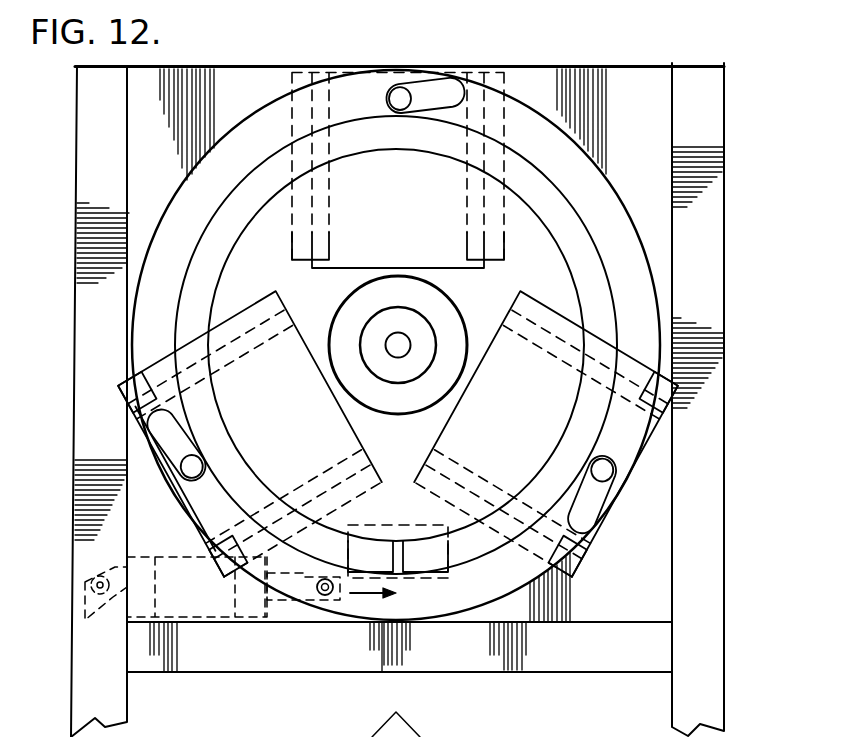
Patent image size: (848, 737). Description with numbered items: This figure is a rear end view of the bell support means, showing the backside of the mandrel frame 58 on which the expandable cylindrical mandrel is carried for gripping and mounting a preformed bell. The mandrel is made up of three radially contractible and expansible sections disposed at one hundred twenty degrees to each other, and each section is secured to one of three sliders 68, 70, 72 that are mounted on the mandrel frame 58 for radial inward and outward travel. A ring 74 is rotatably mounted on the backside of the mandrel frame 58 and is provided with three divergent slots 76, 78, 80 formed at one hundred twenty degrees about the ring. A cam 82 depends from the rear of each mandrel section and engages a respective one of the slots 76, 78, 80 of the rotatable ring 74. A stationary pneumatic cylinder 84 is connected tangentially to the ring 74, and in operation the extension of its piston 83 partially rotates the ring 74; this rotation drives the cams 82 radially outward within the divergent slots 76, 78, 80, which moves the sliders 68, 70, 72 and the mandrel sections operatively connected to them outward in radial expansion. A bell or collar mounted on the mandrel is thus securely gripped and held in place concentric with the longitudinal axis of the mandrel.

The mandrel frame 58 is at (713, 117).
The slider 68 is at (567, 377).
The slider 70 is at (253, 385).
The slider 72 is at (370, 163).
The ring 74 is at (637, 251).
The divergent slot 76 is at (588, 510).
The divergent slot 78 is at (157, 430).
The divergent slot 80 is at (448, 95).
The cam 82 is at (617, 474).
The piston 83 is at (280, 593).
The pneumatic cylinder 84 is at (192, 613).